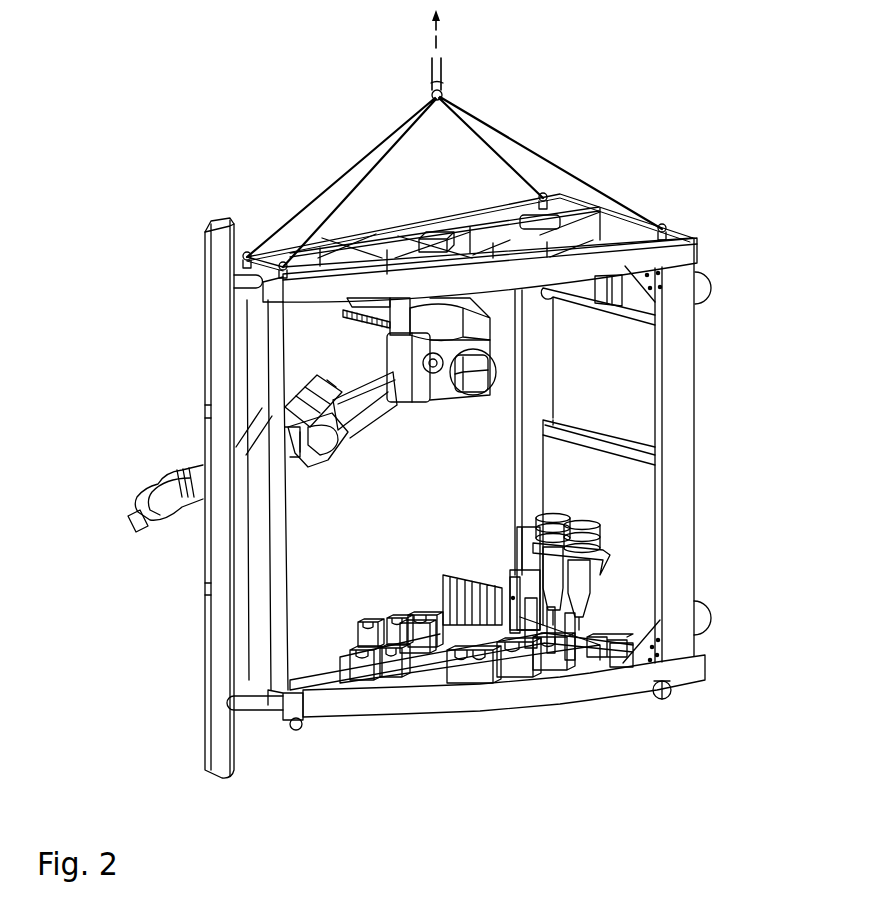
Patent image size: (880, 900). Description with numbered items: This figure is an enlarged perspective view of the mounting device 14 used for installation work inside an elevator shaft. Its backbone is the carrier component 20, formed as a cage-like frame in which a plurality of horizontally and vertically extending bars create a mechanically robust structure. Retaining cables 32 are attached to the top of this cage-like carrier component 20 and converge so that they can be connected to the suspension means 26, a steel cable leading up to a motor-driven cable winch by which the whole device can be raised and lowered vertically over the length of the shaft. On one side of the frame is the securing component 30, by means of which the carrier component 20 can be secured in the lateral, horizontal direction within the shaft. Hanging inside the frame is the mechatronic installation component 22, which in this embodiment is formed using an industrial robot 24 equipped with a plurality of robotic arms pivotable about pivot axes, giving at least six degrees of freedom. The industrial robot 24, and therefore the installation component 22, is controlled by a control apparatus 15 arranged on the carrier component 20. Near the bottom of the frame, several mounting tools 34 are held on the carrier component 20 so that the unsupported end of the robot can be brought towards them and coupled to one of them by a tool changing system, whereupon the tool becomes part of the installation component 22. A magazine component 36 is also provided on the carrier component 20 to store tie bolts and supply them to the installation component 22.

The mounting device 14 is at (232, 174).
The control apparatus 15 is at (433, 230).
The carrier component 20 is at (683, 253).
The mechatronic installation component 22 is at (320, 364).
The industrial robot 24 is at (287, 395).
The suspension means 26 is at (443, 77).
The securing component 30 is at (210, 655).
The retaining cables 32 is at (588, 183).
The mounting tool 34 is at (530, 517).
The magazine component 36 is at (414, 583).